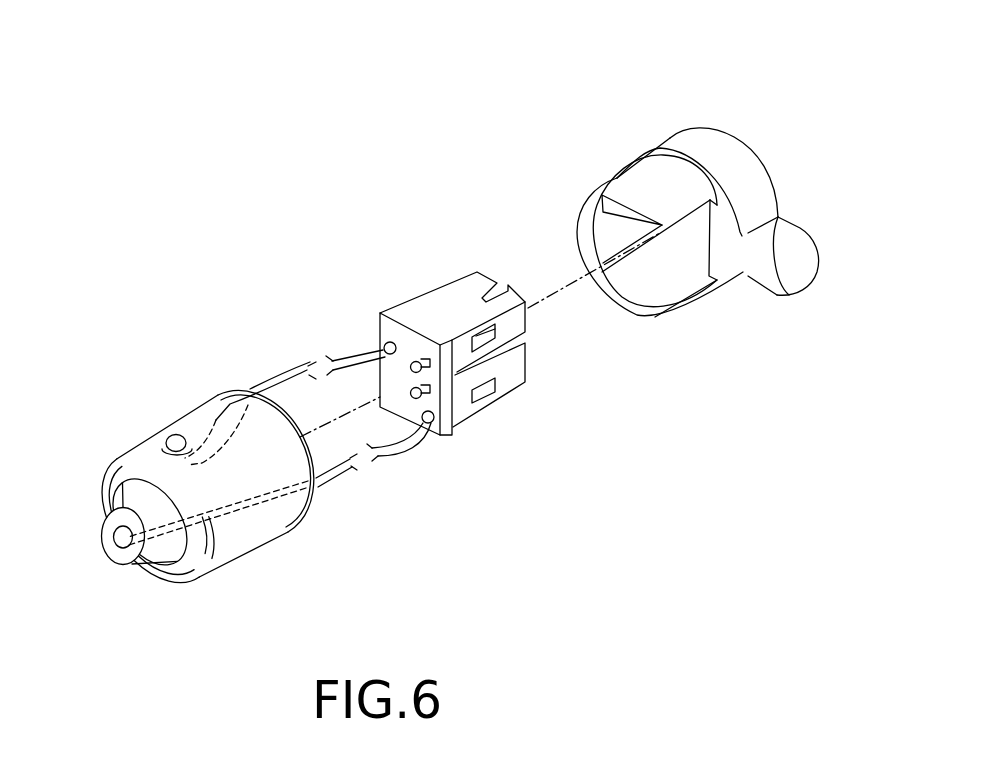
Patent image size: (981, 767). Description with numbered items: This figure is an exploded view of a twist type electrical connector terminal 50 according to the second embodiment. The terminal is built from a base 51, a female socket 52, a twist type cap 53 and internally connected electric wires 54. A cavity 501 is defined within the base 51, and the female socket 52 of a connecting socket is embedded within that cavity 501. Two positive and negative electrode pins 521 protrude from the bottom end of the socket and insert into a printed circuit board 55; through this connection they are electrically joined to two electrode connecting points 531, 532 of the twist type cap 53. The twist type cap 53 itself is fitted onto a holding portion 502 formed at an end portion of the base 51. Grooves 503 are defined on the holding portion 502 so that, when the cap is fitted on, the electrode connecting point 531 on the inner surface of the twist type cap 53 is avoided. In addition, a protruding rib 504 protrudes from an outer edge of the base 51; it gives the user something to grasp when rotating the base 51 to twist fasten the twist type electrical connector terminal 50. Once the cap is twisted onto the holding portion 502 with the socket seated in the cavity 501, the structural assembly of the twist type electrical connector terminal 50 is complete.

The twist type electrical connector terminal 50 is at (610, 411).
The base 51 is at (689, 140).
The cavity 501 is at (613, 238).
The holding portion 502 is at (617, 180).
The grooves 503 is at (667, 293).
The protruding rib 504 is at (793, 243).
The female socket 52 is at (455, 303).
The positive and negative electrode pins 521 is at (414, 362).
The twist type cap 53 is at (213, 438).
The electrode connecting point 531 is at (172, 445).
The electrode connecting point 532 is at (117, 530).
The electric wires 54 is at (280, 371).
The printed circuit board 55 is at (378, 334).